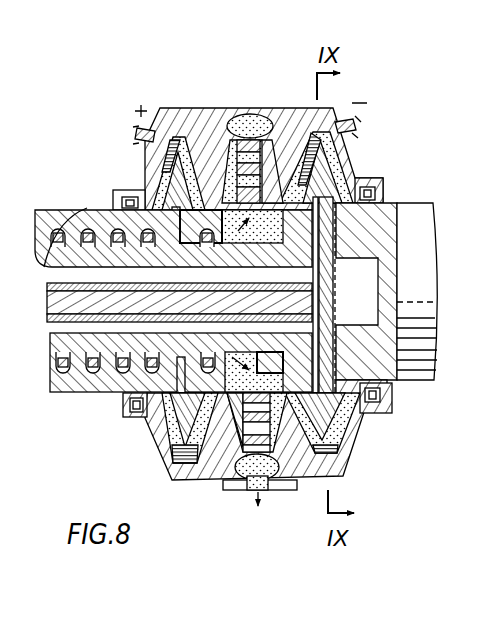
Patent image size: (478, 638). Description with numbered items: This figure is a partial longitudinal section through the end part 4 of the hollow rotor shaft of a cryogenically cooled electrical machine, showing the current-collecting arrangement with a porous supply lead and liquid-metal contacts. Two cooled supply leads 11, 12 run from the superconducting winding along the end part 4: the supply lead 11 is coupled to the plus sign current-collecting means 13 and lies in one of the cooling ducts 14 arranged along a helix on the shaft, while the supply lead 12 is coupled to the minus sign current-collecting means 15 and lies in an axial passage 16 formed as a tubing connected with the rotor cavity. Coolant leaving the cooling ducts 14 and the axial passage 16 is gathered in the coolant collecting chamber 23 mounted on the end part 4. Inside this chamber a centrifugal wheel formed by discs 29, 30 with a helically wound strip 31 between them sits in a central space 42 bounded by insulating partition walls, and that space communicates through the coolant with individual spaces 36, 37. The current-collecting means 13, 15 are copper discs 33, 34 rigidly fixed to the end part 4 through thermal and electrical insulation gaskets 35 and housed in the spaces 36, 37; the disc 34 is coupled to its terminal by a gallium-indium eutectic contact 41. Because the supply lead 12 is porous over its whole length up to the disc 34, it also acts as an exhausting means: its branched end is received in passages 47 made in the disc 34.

The end part of the hollow shaft 4 is at (35, 224).
The supply lead 11 is at (48, 267).
The supply lead 12 is at (50, 303).
The plus sign current-collecting means 13 is at (136, 132).
The cooling ducts 14 is at (88, 212).
The minus sign current-collecting means 15 is at (356, 127).
The axial passage 16 is at (48, 335).
The coolant collecting chamber 23 is at (180, 120).
The disc 29 is at (216, 475).
The disc 30 is at (285, 140).
The strip 31 is at (243, 137).
The disc 33 is at (146, 432).
The disc 34 is at (348, 437).
The thermal/electrical insulation gaskets 35 is at (152, 187).
The space 36 is at (163, 457).
The space 37 is at (376, 422).
The contact 41 is at (340, 452).
The central space 42 is at (230, 122).
The passages 47 is at (357, 163).